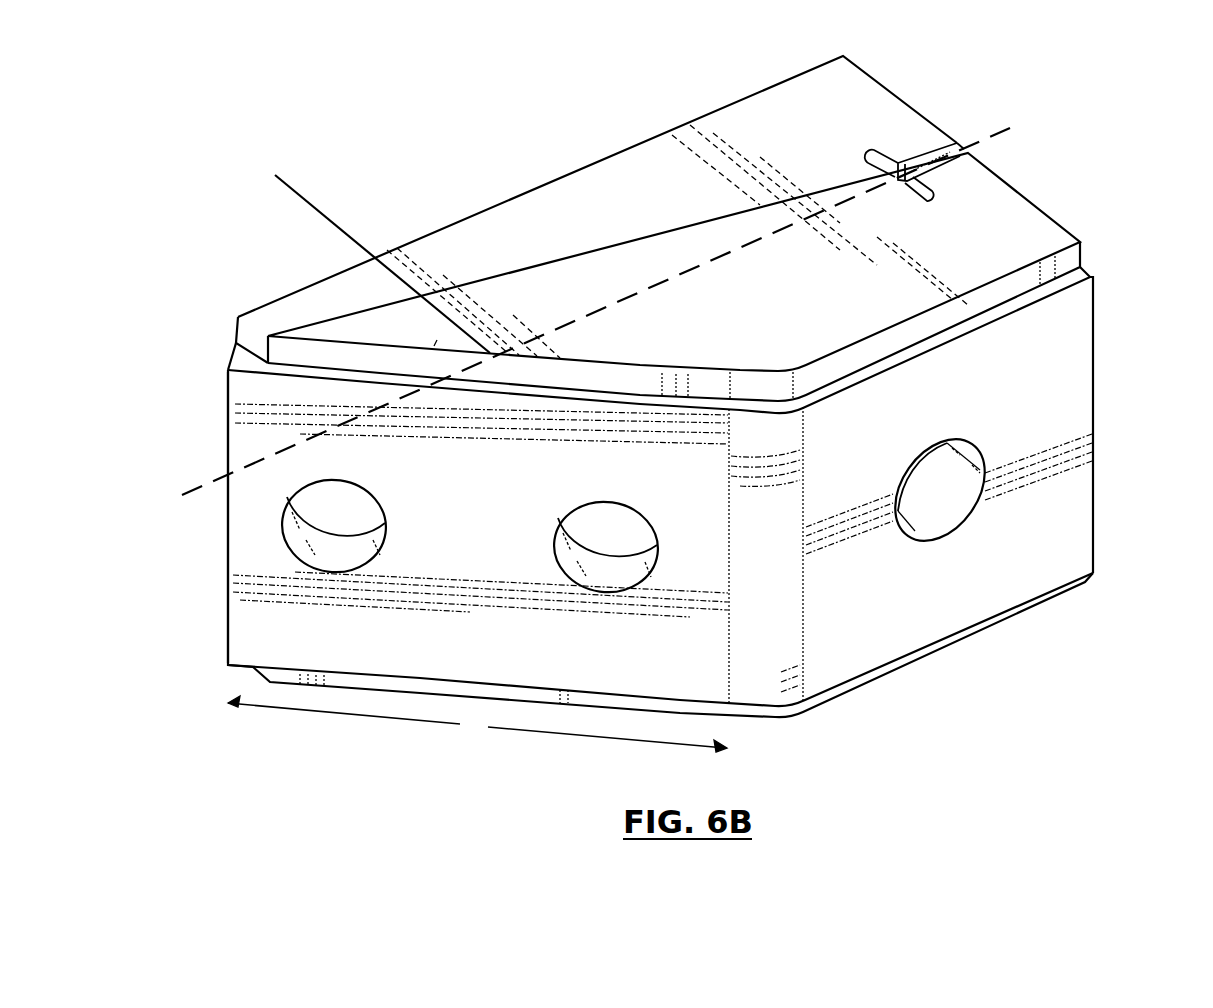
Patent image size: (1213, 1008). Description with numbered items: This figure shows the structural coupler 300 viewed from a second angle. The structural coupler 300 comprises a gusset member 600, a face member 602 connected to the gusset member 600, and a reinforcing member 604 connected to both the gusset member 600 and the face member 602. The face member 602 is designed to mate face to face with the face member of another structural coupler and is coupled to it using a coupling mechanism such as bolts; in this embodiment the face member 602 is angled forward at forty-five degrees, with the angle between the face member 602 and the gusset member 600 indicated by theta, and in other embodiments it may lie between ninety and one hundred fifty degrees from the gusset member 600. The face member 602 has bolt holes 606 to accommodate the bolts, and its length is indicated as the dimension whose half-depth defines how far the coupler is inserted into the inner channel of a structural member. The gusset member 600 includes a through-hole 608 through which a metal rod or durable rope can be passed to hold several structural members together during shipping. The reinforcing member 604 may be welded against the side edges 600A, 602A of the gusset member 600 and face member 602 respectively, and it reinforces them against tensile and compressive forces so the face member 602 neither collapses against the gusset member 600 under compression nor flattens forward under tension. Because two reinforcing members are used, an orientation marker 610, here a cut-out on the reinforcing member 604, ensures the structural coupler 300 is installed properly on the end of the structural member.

The structural coupler 300 is at (1083, 93).
The gusset member 600 is at (990, 574).
The side edge of gusset member 600A is at (1085, 271).
The face member 602 is at (501, 546).
The side edge of face member 602A is at (253, 359).
The reinforcing member 604 is at (688, 292).
The bolt holes 606 is at (603, 542).
The through-hole 608 is at (942, 505).
The orientation marker 610 is at (933, 150).